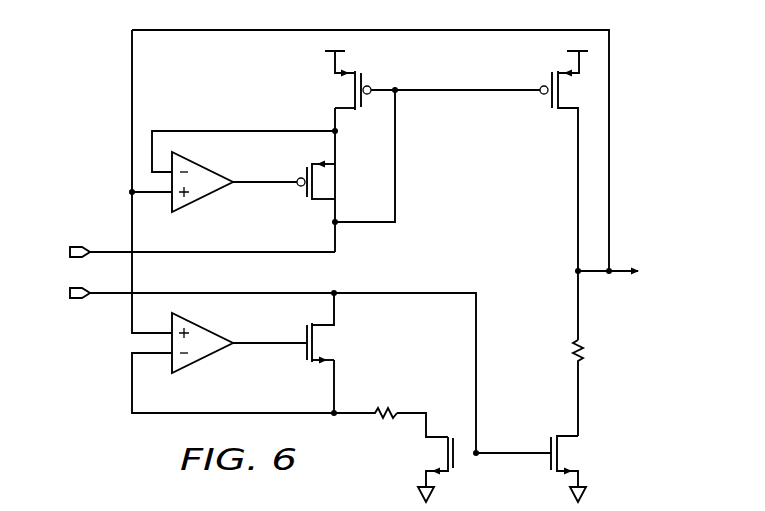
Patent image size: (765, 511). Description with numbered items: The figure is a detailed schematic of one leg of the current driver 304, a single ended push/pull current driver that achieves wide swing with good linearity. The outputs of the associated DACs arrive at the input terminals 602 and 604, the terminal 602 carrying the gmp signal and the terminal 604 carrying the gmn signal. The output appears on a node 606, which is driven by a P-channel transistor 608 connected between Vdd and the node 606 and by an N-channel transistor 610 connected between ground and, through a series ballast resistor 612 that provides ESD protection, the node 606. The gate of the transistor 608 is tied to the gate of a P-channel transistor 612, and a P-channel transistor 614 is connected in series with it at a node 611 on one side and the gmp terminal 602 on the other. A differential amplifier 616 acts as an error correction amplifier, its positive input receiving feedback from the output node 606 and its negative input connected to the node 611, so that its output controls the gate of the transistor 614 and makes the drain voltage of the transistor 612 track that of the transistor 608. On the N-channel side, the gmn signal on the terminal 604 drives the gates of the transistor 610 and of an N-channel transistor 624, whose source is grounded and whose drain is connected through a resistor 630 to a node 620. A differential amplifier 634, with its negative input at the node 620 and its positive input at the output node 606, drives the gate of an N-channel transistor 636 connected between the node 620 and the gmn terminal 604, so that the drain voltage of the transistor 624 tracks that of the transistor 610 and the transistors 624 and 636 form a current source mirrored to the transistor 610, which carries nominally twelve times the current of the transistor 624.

The current driver 304 is at (88, 392).
The input terminal 602 is at (73, 245).
The input terminal 604 is at (73, 301).
The output node 606 is at (579, 276).
The P-channel transistor 608 is at (548, 80).
The N-channel transistor 610 is at (548, 440).
The node 611 is at (332, 128).
The P-channel transistor / ballast resistor 612 is at (368, 78).
The P-channel transistor 614 is at (303, 168).
The differential amplifier 616 is at (205, 198).
The node 620 is at (364, 392).
The N-channel transistor 624 is at (456, 466).
The resistor 630 is at (383, 419).
The differential amplifier 634 is at (205, 360).
The N-channel transistor 636 is at (303, 330).